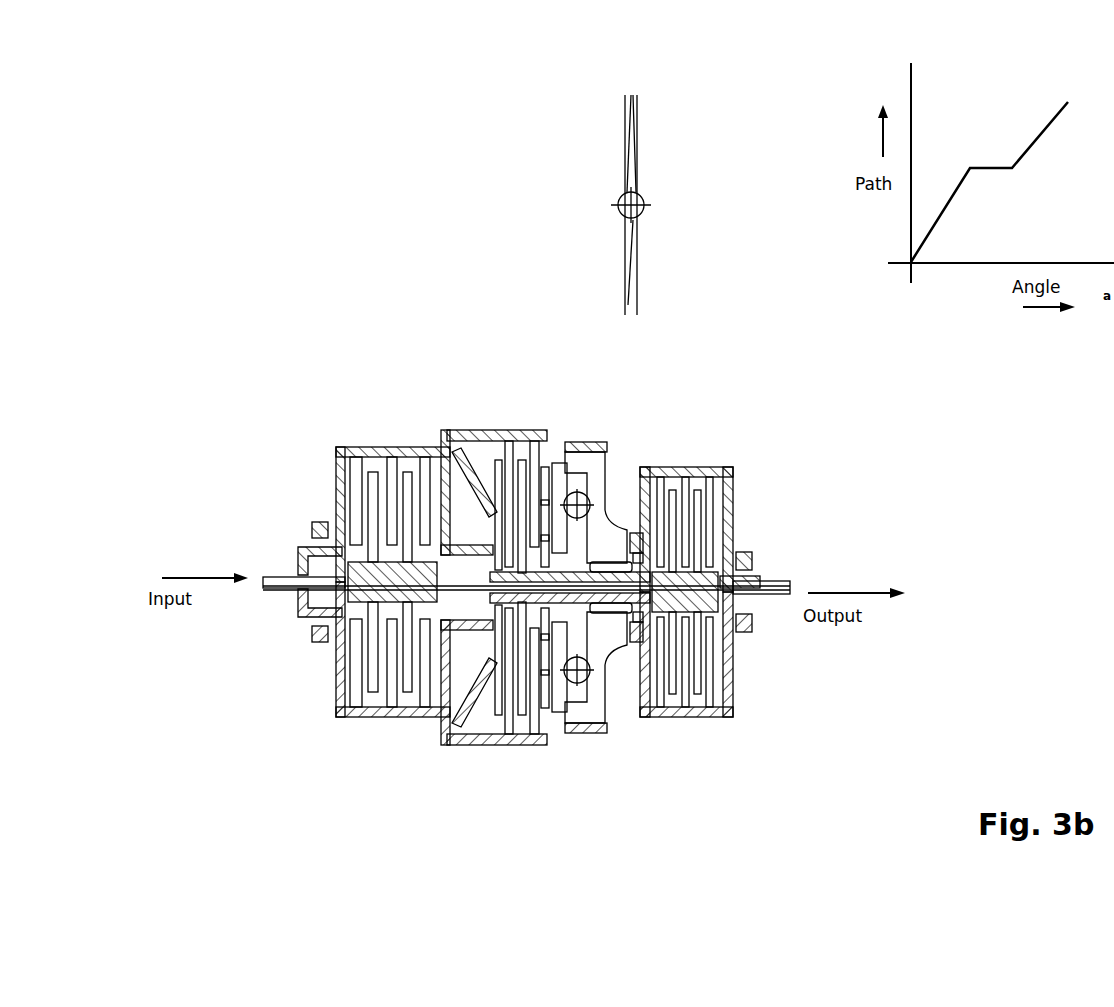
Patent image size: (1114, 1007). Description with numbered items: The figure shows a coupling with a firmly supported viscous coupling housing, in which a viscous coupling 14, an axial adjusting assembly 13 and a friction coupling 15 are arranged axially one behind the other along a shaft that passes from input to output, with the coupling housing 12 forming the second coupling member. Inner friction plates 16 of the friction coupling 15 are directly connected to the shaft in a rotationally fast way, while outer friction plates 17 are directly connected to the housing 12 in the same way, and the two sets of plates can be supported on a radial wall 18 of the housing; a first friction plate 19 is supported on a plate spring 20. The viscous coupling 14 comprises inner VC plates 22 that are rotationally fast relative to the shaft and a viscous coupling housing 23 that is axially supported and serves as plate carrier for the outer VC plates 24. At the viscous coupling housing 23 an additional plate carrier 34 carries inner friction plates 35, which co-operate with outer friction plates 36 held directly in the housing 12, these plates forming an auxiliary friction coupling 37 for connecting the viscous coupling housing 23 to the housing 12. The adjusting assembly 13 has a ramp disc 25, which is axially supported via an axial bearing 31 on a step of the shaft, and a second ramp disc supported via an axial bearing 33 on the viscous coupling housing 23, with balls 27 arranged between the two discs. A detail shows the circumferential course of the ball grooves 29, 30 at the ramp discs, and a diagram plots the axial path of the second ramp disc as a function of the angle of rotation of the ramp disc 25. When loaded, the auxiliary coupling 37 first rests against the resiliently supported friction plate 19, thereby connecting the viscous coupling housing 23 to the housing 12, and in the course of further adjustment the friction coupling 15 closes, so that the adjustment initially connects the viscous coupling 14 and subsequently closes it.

The coupling housing 12 is at (473, 440).
The axial adjusting assembly 13 is at (594, 291).
The second clutch 14 is at (688, 757).
The friction coupling 15 is at (387, 740).
The inner friction plates 16 is at (340, 450).
The outer friction plates 17 is at (375, 455).
The radial wall 18 is at (334, 478).
The first friction plate 19 is at (499, 447).
The plate spring 20 is at (452, 452).
The inner VC plates 22 is at (730, 470).
The viscous coupling housing 23 is at (700, 465).
The outer VC plates 24 is at (720, 465).
The ramp disc 25 is at (638, 462).
The balls 27 is at (590, 453).
The ball groove 29 is at (640, 177).
The ball groove 30 is at (625, 248).
The axial bearing 31 is at (670, 465).
The axial bearing 33 is at (560, 450).
The additional plate carrier 34 is at (520, 445).
The inner friction plates 35 is at (546, 465).
The outer friction plates 36 is at (509, 445).
The auxiliary friction coupling 37 is at (504, 325).